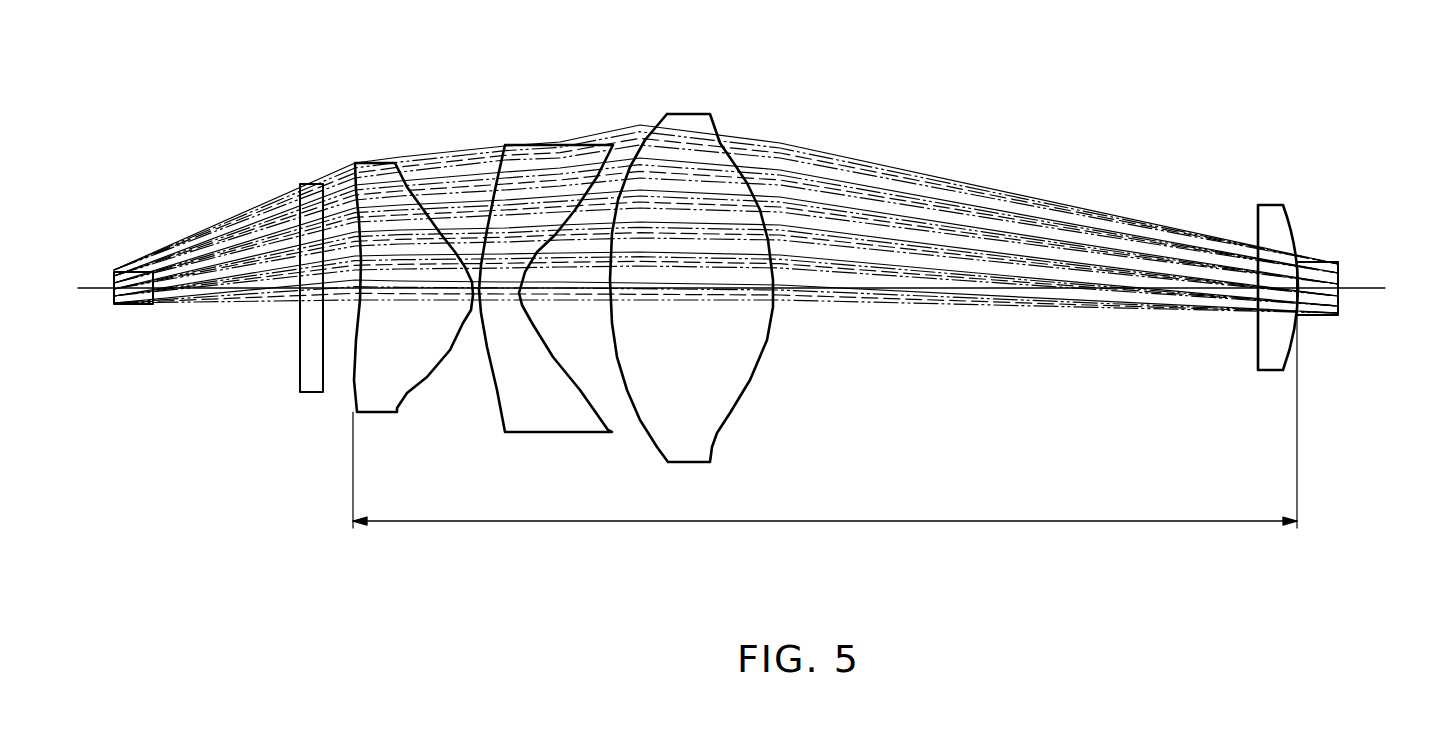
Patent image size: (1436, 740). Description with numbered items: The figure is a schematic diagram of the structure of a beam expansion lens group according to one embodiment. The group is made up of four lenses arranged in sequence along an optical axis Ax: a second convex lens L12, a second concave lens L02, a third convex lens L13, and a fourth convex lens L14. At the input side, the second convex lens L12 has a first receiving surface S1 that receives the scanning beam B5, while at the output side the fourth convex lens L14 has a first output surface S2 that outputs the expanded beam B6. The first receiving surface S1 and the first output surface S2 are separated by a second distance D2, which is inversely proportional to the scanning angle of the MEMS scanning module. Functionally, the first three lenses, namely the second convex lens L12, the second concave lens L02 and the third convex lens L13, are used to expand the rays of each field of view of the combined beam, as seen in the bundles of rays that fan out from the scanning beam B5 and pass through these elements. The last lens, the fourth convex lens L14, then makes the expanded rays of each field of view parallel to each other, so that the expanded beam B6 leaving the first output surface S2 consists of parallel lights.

The scanning beam B5 is at (165, 252).
The first receiving surface S1 is at (352, 382).
The second convex lens L12 is at (372, 163).
The second concave lens L02 is at (553, 145).
The third convex lens L13 is at (688, 114).
The fourth convex lens L14 is at (1270, 205).
The expanded beam B6 is at (1330, 262).
The first output surface S2 is at (1297, 343).
The optical axis Ax is at (751, 289).
The second distance D2 is at (825, 470).